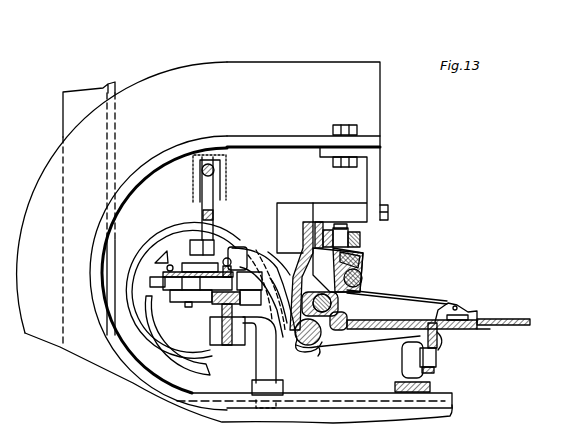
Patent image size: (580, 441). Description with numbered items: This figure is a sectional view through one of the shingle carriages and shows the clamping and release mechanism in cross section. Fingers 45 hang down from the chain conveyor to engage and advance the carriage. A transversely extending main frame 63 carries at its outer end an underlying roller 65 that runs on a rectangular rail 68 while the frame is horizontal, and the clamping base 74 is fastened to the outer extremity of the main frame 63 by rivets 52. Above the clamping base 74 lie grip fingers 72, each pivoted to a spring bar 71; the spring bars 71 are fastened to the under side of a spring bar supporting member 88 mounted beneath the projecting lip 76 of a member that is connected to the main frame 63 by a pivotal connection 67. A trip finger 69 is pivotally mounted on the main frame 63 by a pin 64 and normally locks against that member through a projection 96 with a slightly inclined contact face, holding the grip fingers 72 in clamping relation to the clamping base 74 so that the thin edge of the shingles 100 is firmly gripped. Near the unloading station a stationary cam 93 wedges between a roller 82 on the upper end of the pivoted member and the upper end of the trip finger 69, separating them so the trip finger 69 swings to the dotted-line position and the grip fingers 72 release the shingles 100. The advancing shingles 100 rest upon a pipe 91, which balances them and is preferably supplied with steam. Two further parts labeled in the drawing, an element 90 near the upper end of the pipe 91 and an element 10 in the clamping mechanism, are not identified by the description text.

The fingers 45 is at (198, 240).
The roller 90 is at (214, 172).
The pipe 91 is at (210, 189).
The stationary cam 93 is at (335, 208).
The trip finger 69 is at (300, 264).
The roller 82 is at (356, 240).
The member 10 is at (355, 258).
The projecting lip 76 is at (356, 264).
The spring bar supporting member 88 is at (362, 278).
The pivotal connection 67 is at (346, 318).
The projection 96 is at (305, 346).
The pin 64 is at (322, 357).
The main frame 63 is at (352, 340).
The roller 65 is at (407, 358).
The rectangular rail 68 is at (397, 384).
The spring bar 71 is at (398, 297).
The grip finger 72 is at (450, 303).
The shingles 100 is at (494, 320).
The clamping base 74 is at (474, 329).
The rivets 52 is at (440, 345).